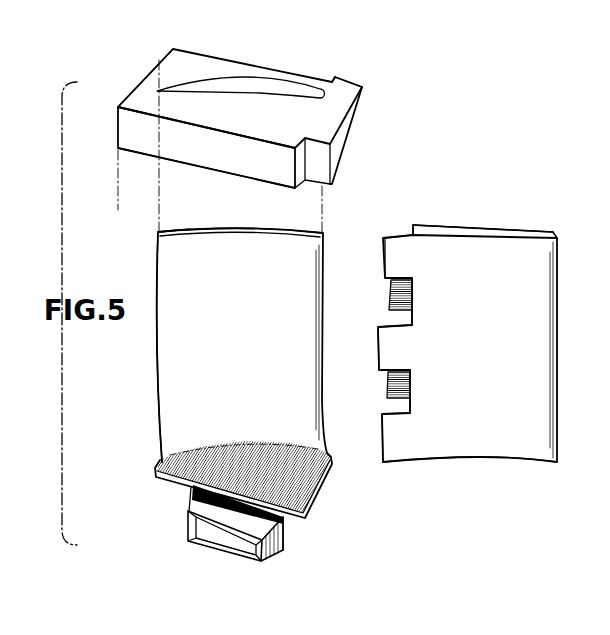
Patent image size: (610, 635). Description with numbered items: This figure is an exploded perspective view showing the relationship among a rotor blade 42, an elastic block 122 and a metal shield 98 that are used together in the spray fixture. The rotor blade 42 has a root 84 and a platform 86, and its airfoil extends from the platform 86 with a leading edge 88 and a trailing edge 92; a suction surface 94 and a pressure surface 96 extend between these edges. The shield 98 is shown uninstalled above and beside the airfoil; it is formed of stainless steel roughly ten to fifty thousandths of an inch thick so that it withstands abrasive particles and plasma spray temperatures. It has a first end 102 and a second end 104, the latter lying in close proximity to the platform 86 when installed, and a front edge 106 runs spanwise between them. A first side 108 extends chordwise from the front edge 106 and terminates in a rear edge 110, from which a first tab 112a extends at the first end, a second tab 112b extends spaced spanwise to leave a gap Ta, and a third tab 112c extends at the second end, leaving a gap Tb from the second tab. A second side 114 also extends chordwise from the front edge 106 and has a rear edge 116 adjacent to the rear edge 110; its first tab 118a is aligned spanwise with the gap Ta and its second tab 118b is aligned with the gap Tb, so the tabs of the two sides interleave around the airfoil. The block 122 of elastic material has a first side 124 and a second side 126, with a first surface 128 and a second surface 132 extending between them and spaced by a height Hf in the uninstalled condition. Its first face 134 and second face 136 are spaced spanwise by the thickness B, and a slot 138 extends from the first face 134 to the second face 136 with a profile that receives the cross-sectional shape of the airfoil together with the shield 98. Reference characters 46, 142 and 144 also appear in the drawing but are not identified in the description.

The rotor blade 42 is at (217, 390).
The blade tip 46 is at (304, 228).
The root 84 is at (215, 541).
The platform 86 is at (300, 492).
The leading edge 88 is at (323, 297).
The trailing edge 92 is at (157, 294).
The suction surface 94 is at (257, 322).
The pressure surface 96 is at (180, 228).
The metal shield 98 is at (464, 355).
The first end 102 is at (470, 243).
The second end 104 is at (460, 459).
The front edge 106 is at (560, 325).
The first side 108 is at (526, 342).
The rear edge 110 is at (414, 290).
The first tab 112a is at (438, 268).
The second tab 112b is at (385, 359).
The third tab 112c is at (388, 450).
The second side 114 is at (474, 215).
The rear edge 116 is at (413, 224).
The first tab 118a is at (390, 291).
The second tab 118b is at (387, 382).
The block 122 is at (302, 108).
The first side 124 is at (179, 155).
The second side 126 is at (307, 79).
The first surface 128 is at (350, 122).
The second surface 132 is at (155, 70).
The first face 134 is at (271, 129).
The second face 136 is at (184, 166).
The slot 138 is at (207, 90).
The corner notch 142 is at (306, 170).
The top corner 144 is at (345, 80).
The thickness B is at (92, 58).
The height Hf is at (173, 49).
The gap Ta is at (413, 280).
The gap Tb is at (411, 372).